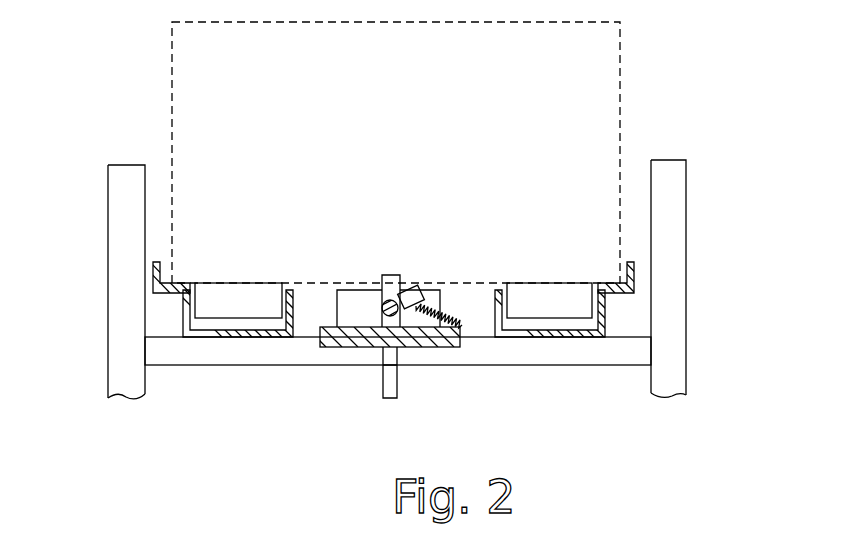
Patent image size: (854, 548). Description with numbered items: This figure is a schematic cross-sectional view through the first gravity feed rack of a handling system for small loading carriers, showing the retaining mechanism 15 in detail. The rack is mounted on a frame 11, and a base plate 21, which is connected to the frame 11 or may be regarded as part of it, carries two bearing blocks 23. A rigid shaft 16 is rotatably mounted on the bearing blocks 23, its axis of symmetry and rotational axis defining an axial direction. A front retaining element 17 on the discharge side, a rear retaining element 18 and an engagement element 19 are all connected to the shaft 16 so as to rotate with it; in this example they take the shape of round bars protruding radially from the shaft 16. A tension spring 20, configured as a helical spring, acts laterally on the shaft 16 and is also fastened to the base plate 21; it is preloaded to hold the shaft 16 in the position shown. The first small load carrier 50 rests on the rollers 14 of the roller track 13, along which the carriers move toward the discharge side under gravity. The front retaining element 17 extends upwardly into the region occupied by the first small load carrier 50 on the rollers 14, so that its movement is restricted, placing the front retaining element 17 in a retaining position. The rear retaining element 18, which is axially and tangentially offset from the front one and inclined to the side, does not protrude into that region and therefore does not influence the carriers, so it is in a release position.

The frame 11 is at (118, 163).
The roller track 13 is at (216, 248).
The rollers 14 is at (252, 314).
The retaining mechanism 15 is at (341, 252).
The shaft 16 is at (393, 293).
The front retaining element 17 is at (388, 275).
The rear retaining element 18 is at (420, 287).
The engagement element 19 is at (382, 393).
The tension spring 20 is at (458, 318).
The base plate 21 is at (433, 347).
The bearing blocks 23 is at (337, 290).
The first small load carrier 50 is at (410, 167).